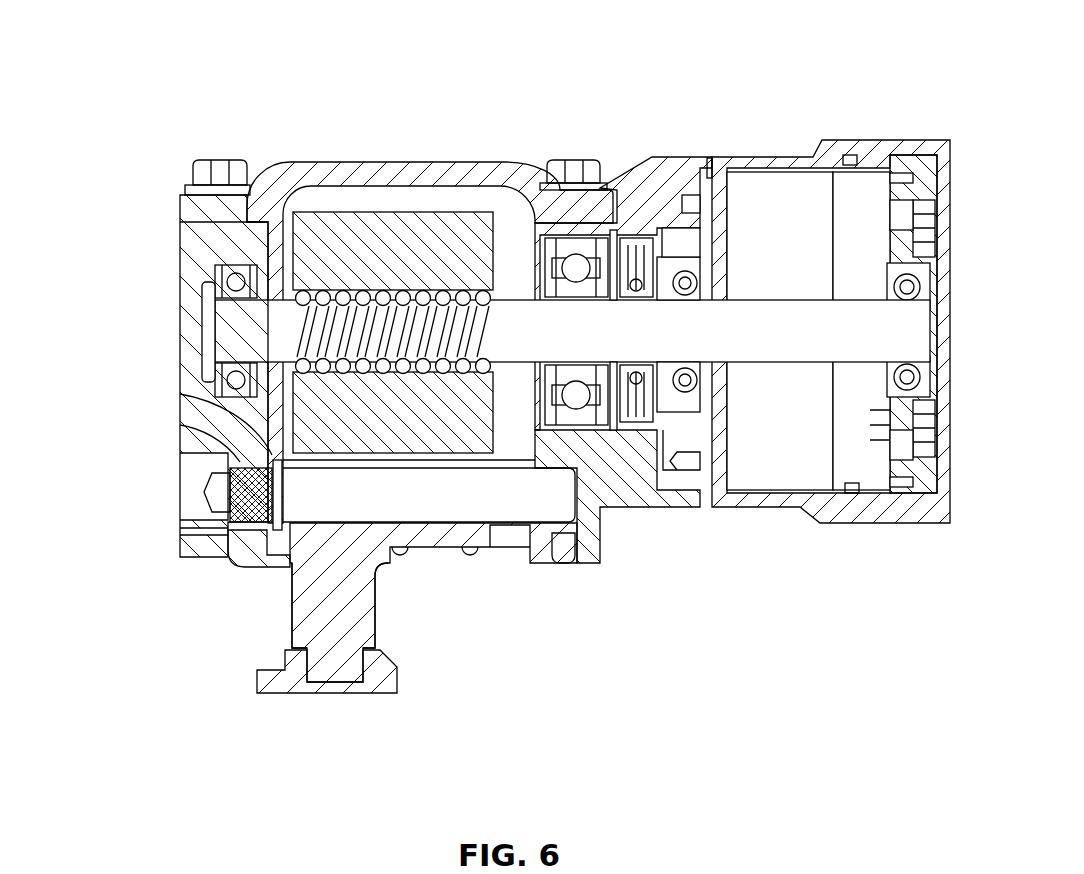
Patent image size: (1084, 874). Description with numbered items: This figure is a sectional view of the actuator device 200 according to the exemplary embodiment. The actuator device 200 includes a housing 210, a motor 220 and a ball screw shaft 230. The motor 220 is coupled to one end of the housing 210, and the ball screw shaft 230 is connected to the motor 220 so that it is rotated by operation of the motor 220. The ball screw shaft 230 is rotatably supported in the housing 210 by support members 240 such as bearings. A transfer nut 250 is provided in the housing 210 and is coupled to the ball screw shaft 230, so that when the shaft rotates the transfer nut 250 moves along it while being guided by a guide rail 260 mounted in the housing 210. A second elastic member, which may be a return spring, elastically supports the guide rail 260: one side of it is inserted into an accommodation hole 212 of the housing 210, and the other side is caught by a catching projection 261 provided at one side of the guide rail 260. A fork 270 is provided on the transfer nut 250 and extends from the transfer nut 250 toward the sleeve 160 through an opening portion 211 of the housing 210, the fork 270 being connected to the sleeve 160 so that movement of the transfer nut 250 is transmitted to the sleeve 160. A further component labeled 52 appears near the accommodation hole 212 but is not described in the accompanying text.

The actuator device 200 is at (498, 376).
The housing 210 is at (331, 165).
The opening portion 211 is at (503, 542).
The accommodation hole 212 is at (227, 484).
The motor 220 is at (772, 190).
The ball screw shaft 230 is at (438, 292).
The support member 240 is at (218, 250).
The transfer nut 250 is at (323, 230).
The guide rail 260 is at (550, 502).
The catching projection 261 is at (185, 398).
The fork 270 is at (355, 600).
The sleeve 160 is at (398, 682).
The flange 52 is at (180, 425).